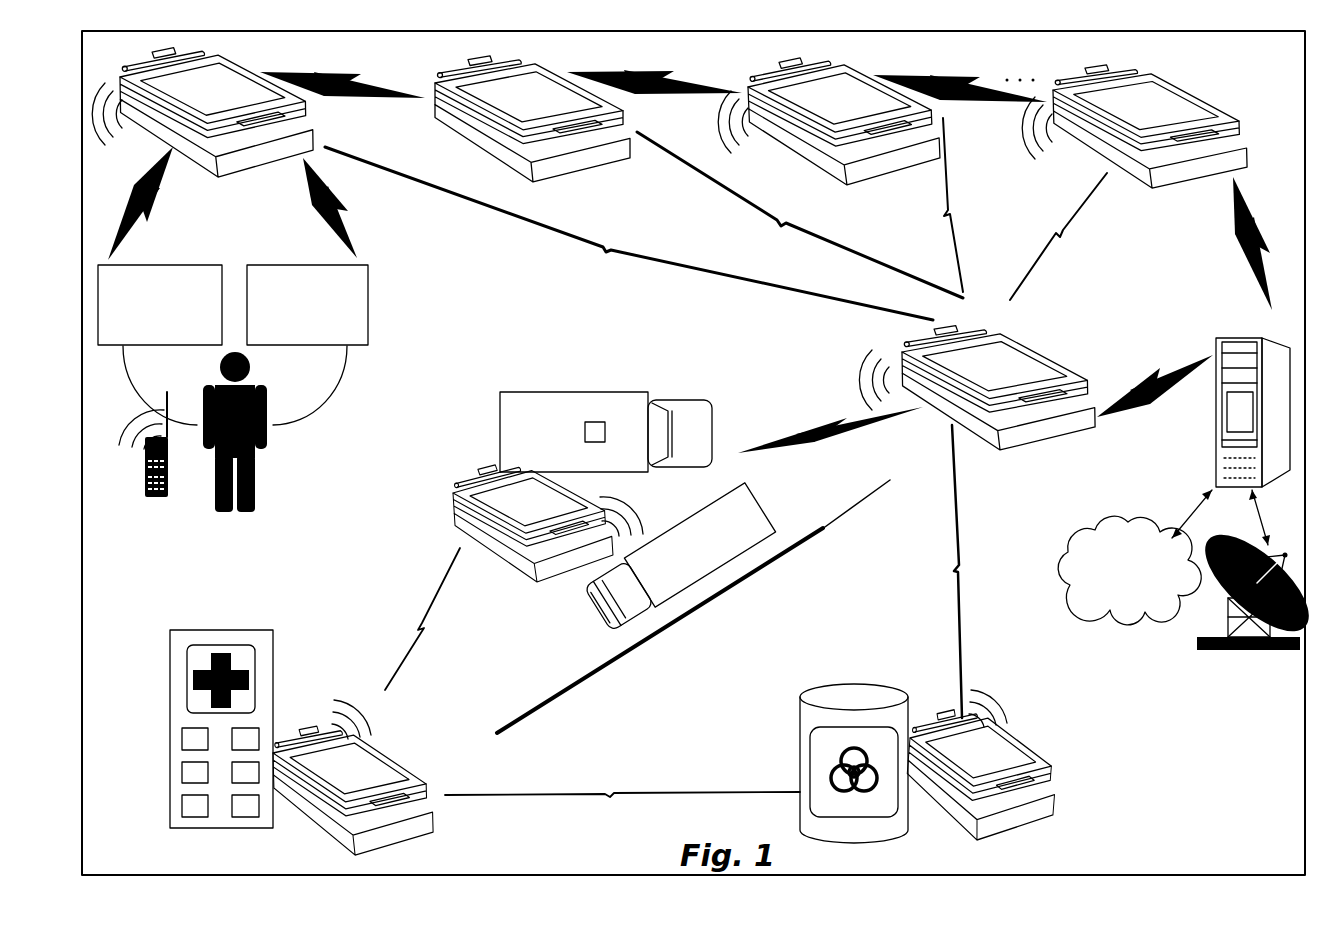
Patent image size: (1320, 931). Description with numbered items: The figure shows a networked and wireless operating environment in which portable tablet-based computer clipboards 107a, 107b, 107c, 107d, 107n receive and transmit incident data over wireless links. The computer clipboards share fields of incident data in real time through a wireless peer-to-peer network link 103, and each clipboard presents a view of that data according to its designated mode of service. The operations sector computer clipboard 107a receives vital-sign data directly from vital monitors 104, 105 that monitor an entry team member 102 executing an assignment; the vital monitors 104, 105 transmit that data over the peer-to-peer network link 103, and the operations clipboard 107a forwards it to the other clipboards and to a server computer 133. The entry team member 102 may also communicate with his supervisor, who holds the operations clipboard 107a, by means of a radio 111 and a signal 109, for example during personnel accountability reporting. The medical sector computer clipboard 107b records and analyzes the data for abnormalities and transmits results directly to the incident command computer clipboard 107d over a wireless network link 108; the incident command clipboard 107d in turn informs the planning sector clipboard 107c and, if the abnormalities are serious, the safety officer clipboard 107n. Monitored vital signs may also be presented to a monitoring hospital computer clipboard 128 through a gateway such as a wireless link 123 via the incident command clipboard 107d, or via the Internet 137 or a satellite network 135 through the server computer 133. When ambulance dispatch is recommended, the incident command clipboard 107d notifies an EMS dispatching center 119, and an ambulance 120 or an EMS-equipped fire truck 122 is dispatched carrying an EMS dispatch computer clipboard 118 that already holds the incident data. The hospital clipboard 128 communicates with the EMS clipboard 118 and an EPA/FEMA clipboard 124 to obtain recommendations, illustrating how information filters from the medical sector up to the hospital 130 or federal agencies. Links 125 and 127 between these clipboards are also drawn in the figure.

The entry team member 102 is at (255, 485).
The wireless peer-to-peer network link 103 is at (334, 72).
The vital monitor 104 is at (128, 268).
The vital monitor 105 is at (275, 268).
The operations sector computer clipboard 107a is at (227, 58).
The medical sector computer clipboard 107b is at (545, 63).
The planning sector computer clipboard 107c is at (858, 67).
The incident command computer clipboard 107d is at (1035, 363).
The safety officer computer clipboard 107n is at (1163, 72).
The wireless network link 108 is at (520, 215).
The signal 109 is at (1046, 677).
The radio 111 is at (143, 452).
The EMS dispatch computer clipboard 118 is at (514, 522).
The EMS dispatching center 119 is at (498, 594).
The ambulance 120 is at (513, 387).
The EMS-equipped fire truck 122 is at (758, 500).
The wireless link 123 is at (833, 443).
The EPA/FEMA clipboard 124 is at (1013, 737).
The communication link between hospital and EPA/FEMA 125 is at (640, 790).
The communication link between EMS dispatch and hospital 127 is at (435, 613).
The hospital computer clipboard 128 is at (372, 738).
The hospital 130 is at (253, 632).
The server computer 133 is at (1212, 415).
The satellite network 135 is at (1193, 648).
The Internet 137 is at (1075, 545).